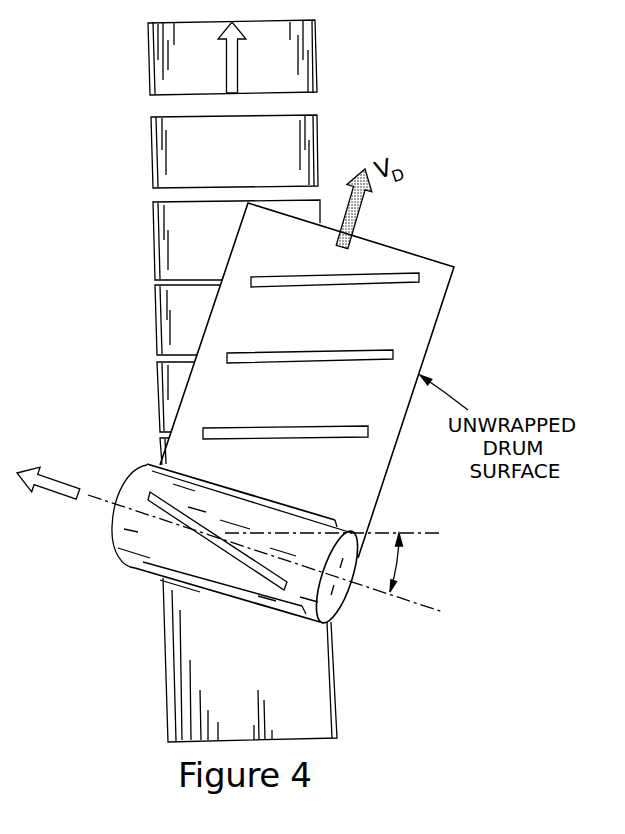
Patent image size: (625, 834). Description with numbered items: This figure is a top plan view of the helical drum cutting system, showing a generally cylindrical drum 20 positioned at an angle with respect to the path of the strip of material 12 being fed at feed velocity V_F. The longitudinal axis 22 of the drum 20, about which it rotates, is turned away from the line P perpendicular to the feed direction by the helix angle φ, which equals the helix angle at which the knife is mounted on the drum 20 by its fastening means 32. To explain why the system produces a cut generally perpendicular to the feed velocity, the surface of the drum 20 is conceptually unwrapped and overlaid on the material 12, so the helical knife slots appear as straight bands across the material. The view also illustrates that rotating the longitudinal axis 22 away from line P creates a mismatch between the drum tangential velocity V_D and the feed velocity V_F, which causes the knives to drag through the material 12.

The material 12 is at (152, 162).
The drum 20 is at (112, 545).
The longitudinal axis 22 is at (281, 562).
The fastening means 32 is at (228, 57).